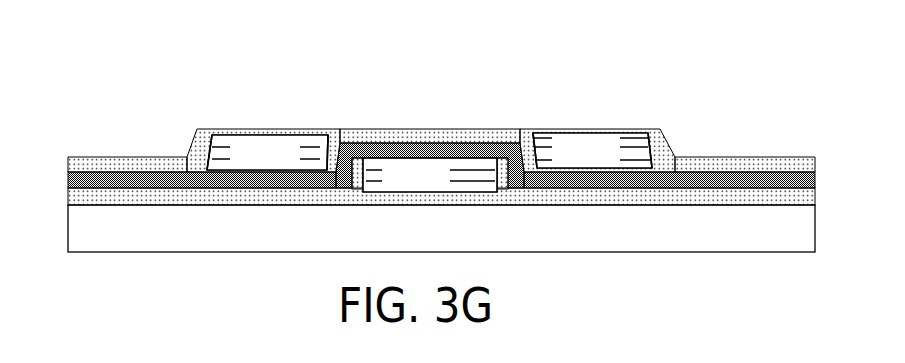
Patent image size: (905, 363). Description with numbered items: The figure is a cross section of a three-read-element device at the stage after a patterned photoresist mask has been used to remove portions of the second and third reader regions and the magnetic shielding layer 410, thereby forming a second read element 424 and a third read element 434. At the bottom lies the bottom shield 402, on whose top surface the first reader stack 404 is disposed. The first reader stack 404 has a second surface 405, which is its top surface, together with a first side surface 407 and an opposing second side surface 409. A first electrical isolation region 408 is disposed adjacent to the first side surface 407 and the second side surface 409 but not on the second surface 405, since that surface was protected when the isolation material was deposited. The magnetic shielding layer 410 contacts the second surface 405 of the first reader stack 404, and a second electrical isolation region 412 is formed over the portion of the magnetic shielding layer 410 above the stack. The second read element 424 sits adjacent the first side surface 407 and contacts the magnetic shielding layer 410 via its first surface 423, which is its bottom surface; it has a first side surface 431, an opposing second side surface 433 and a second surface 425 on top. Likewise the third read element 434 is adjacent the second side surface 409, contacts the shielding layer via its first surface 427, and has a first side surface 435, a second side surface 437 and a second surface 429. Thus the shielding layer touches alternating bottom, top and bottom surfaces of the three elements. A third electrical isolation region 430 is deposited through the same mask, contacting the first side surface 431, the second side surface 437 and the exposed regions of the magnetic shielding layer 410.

The bottom shield 402 is at (195, 243).
The first reader stack 404 is at (435, 188).
The second surface 405 is at (388, 149).
The first side surface 407 is at (360, 200).
The first electrical isolation region 408 is at (94, 197).
The second side surface 409 is at (500, 198).
The magnetic shielding layer 410 is at (441, 164).
The second electrical isolation region 412 is at (470, 128).
The first surface 423 is at (247, 192).
The second read element 424 is at (286, 120).
The second surface 425 is at (283, 124).
The first surface 427 is at (608, 187).
The second surface 429 is at (577, 120).
The third electrical isolation region 430 is at (441, 91).
The first side surface 431 is at (224, 131).
The second side surface 433 is at (323, 124).
The third read element 434 is at (593, 113).
The first side surface 435 is at (546, 139).
The second side surface 437 is at (640, 130).